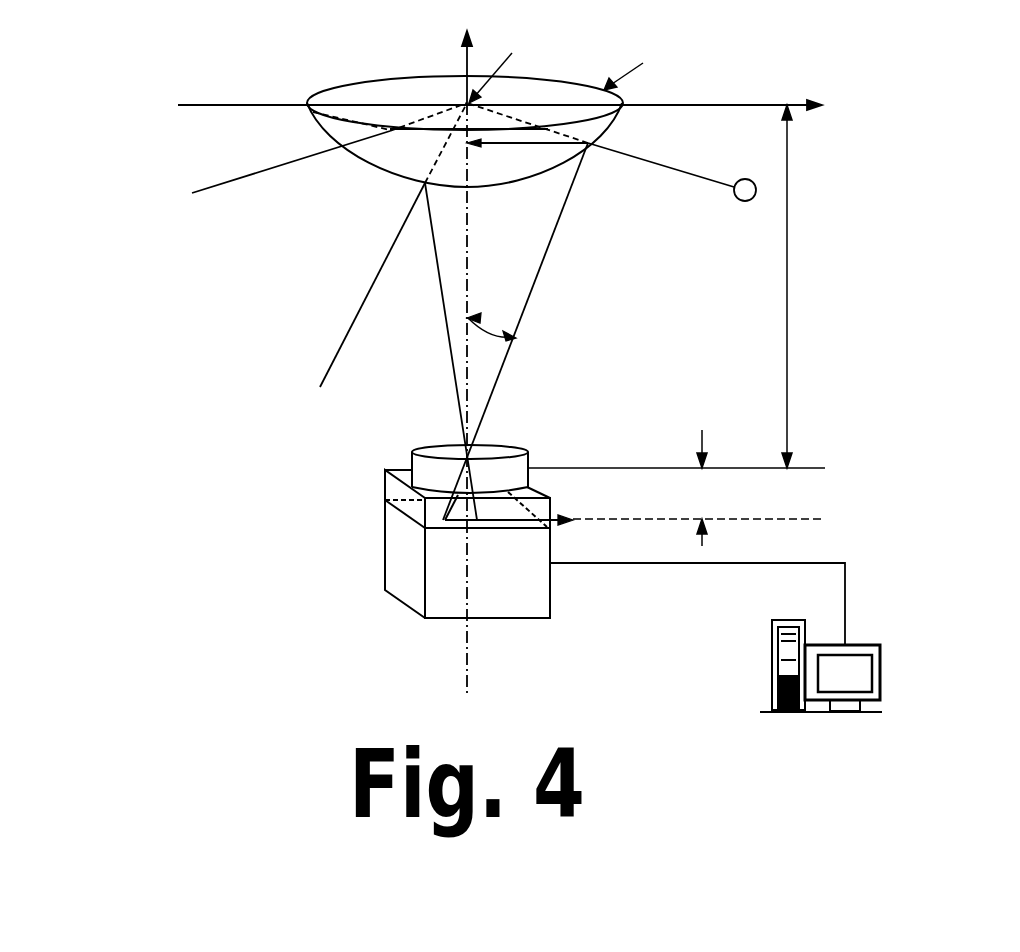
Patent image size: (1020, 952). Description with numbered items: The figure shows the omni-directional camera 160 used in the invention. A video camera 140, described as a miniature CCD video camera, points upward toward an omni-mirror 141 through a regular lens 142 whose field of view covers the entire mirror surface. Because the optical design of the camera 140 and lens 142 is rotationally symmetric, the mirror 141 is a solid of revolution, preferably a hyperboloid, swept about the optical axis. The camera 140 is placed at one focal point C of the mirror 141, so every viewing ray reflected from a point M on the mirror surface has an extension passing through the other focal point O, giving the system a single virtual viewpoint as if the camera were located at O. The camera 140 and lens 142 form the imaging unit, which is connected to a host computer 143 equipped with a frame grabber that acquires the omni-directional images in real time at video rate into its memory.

The omni-directional camera 160 is at (517, 378).
The omni-mirror 141 is at (412, 148).
The lens 142 is at (532, 451).
The video camera 140 is at (393, 574).
The host computer 143 is at (716, 658).